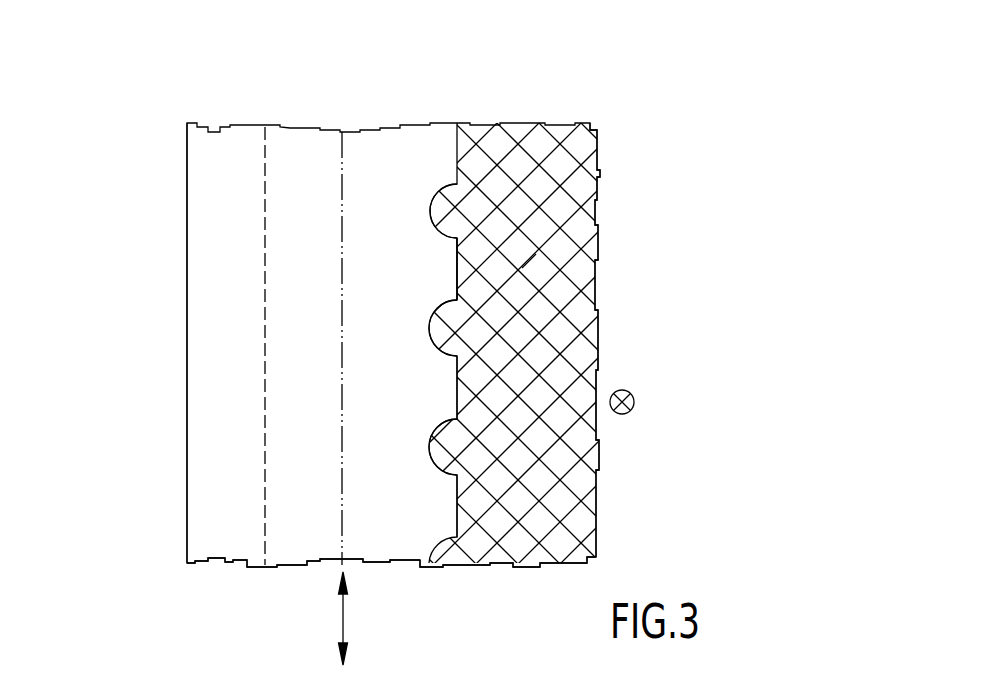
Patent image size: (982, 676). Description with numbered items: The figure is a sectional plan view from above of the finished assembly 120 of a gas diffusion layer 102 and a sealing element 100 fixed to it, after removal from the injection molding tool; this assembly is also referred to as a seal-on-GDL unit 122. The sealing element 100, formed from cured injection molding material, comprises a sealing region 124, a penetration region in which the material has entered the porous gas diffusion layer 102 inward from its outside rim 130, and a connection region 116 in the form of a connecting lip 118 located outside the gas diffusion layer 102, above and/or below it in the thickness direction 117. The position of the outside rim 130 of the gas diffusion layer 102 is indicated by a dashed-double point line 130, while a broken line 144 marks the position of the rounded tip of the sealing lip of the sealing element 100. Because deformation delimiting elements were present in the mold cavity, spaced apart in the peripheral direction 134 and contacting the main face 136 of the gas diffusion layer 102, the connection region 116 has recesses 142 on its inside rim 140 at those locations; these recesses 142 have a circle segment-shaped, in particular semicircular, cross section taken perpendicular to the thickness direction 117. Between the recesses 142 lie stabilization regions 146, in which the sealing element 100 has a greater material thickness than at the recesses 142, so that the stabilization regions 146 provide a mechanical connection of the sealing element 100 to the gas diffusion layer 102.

The sealing element 100 is at (162, 184).
The gas diffusion layer 102 is at (560, 193).
The connection region 116 is at (433, 130).
The thickness direction 117 is at (634, 405).
The connecting lip 118 is at (410, 556).
The assembly 120 is at (508, 102).
The seal-on-GDL unit 122 is at (507, 592).
The sealing region 124 is at (162, 337).
The outside rim 130 is at (342, 516).
The peripheral direction 134 is at (344, 617).
The main face 136 is at (523, 272).
The inside rim 140 is at (458, 262).
The recesses 142 is at (470, 200).
The broken line 144 is at (263, 523).
The stabilization regions 146 is at (432, 264).